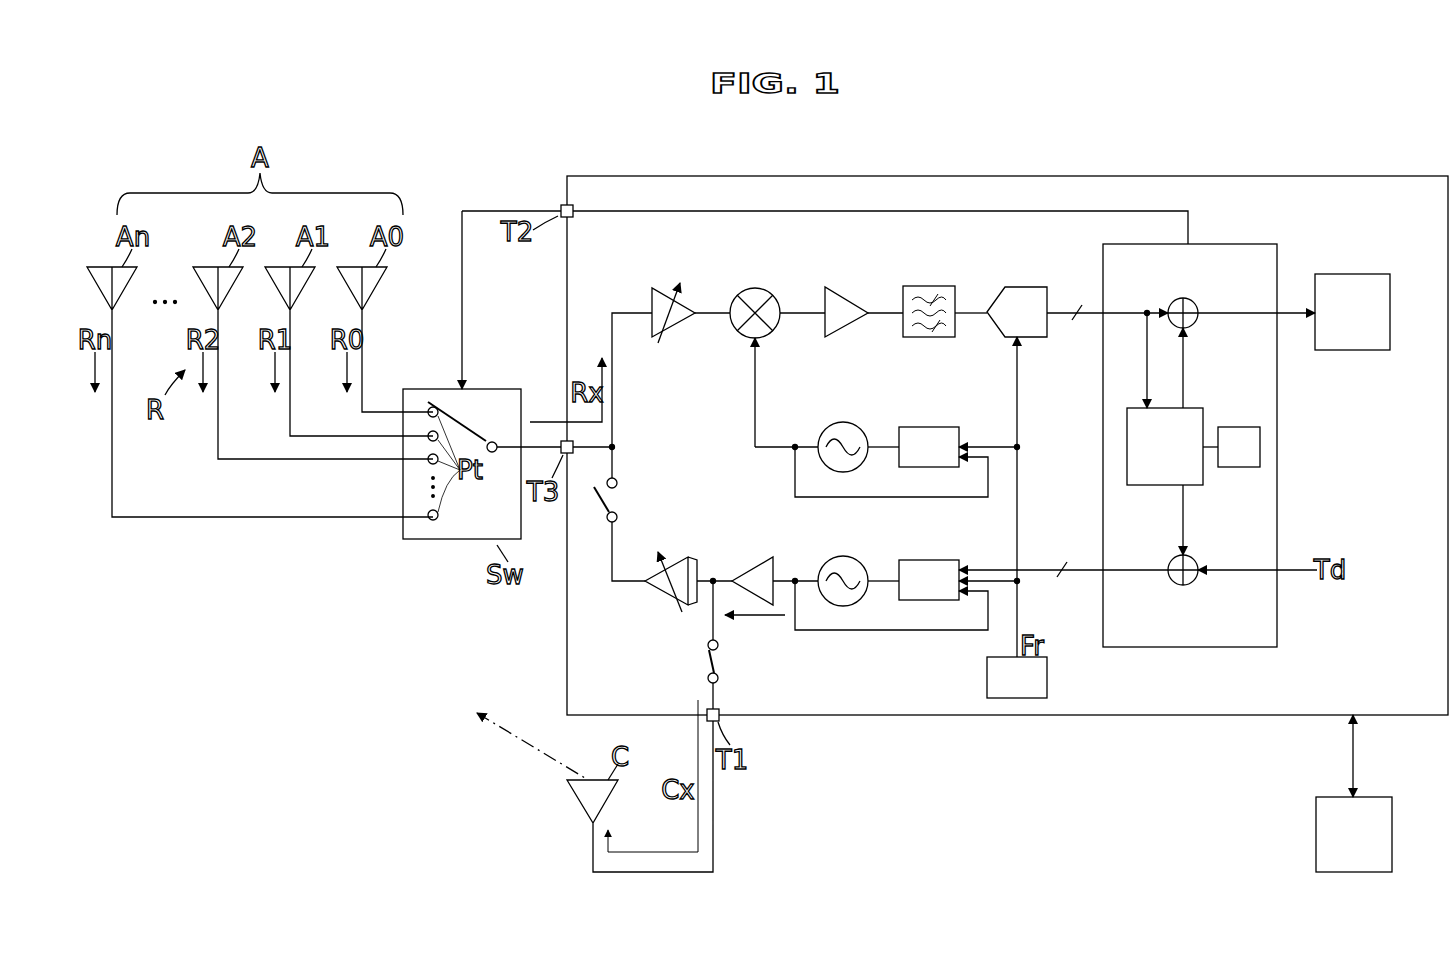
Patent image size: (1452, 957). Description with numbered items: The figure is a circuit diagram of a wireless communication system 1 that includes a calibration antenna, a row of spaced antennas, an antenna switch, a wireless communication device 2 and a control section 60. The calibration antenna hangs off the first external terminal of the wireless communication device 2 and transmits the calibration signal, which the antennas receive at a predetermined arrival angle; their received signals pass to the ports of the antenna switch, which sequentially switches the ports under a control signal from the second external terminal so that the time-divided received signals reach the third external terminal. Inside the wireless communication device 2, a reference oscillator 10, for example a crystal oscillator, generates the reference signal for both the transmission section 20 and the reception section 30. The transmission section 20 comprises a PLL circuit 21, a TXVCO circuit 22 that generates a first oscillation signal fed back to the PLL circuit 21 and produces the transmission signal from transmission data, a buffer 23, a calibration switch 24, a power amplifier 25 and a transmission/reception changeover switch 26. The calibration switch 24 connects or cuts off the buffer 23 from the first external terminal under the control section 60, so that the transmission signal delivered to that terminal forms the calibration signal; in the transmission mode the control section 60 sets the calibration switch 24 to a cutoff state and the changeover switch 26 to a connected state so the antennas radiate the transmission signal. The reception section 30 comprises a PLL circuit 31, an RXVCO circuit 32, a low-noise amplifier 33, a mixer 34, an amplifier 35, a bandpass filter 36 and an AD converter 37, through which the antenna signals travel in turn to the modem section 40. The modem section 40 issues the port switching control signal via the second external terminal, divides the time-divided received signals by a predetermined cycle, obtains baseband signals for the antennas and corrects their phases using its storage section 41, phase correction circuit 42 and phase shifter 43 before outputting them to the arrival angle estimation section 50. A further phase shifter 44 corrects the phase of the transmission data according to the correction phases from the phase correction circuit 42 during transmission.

The wireless communication system 1 is at (287, 778).
The wireless communication device 2 is at (1226, 176).
The reference oscillator 10 is at (1050, 678).
The transmission section 20 is at (738, 510).
The PLL circuit 21 is at (910, 560).
The TXVCO circuit 22 is at (826, 558).
The buffer 23 is at (747, 560).
The calibration switch 24 is at (706, 652).
The power amplifier 25 is at (664, 558).
The transmission/reception changeover switch 26 is at (603, 498).
The reception section 30 is at (738, 420).
The PLL circuit 31 is at (930, 427).
The RXVCO circuit 32 is at (858, 425).
The low-noise amplifier 33 is at (662, 290).
The mixer 34 is at (770, 292).
The amplifier 35 is at (833, 288).
The bandpass filter 36 is at (925, 286).
The AD converter 37 is at (1028, 287).
The modem section 40 is at (1237, 242).
The storage section 41 is at (1242, 427).
The phase correction circuit 42 is at (1203, 408).
The phase shifter 43 is at (1190, 298).
The phase shifter 44 is at (1194, 556).
The arrival angle estimation section 50 is at (1352, 274).
The control section 60 is at (1337, 849).